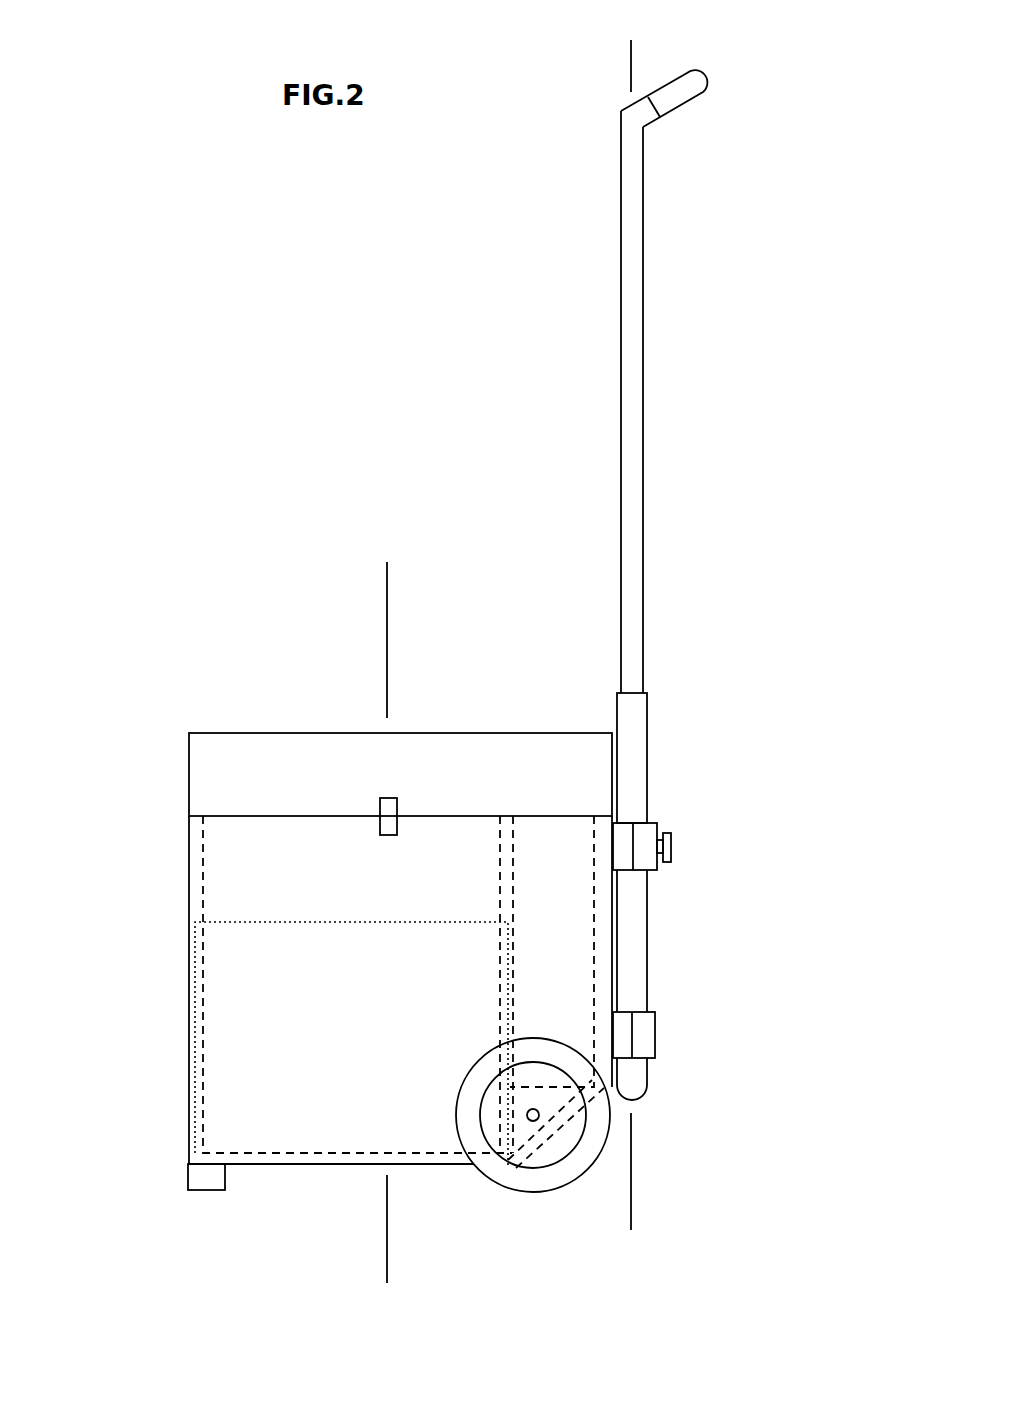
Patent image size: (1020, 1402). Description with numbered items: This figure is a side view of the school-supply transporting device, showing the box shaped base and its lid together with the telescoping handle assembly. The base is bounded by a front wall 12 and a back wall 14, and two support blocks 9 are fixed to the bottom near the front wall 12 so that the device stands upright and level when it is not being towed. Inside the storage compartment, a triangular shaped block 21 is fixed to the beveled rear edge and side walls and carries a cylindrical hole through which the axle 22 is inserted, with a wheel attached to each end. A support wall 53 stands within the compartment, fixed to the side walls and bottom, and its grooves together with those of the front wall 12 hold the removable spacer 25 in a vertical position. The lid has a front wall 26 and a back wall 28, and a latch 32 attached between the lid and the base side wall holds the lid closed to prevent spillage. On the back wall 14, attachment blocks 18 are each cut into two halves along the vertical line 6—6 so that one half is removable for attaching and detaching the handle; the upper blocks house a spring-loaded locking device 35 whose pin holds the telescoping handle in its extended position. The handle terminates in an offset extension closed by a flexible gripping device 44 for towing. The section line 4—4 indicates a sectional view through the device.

The section line 4- 4 is at (387, 926).
The vertical line 6— 6 is at (631, 638).
The support blocks 9 is at (190, 1208).
The front wall 12 is at (175, 1073).
The back wall 14 is at (632, 950).
The attachment blocks 18 is at (673, 1062).
The triangular shaped block 21 is at (567, 1129).
The axle 22 is at (511, 1140).
The removable spacer 25 is at (182, 950).
The front wall of the lid 26 is at (175, 773).
The back wall of the lid 28 is at (626, 769).
The latch 32 is at (375, 780).
The spring-loaded locking device 35 is at (691, 844).
The flexible gripping device 44 is at (737, 85).
The support wall 53 is at (494, 800).